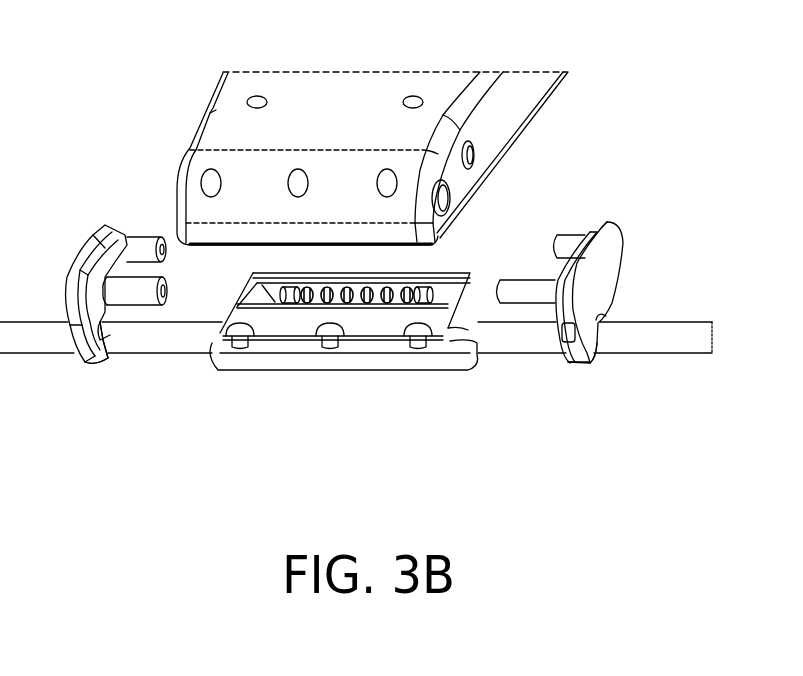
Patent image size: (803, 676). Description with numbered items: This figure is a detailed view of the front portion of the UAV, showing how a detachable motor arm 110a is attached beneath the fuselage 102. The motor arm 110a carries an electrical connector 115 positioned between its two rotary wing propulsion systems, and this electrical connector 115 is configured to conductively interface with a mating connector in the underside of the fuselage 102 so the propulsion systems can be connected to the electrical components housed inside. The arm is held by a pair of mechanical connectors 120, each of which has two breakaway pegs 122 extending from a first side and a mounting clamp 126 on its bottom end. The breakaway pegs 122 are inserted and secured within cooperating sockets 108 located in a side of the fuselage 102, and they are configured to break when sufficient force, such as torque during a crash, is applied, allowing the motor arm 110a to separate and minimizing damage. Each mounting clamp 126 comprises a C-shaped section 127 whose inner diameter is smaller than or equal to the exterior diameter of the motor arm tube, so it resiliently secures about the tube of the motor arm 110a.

The fuselage 102 is at (367, 84).
The cooperating sockets 108 is at (447, 205).
The motor arm 110a is at (682, 343).
The electrical connector 115 is at (340, 365).
The mechanical connector 120 is at (112, 226).
The breakaway pegs 122 is at (166, 249).
The mounting clamp 126 is at (90, 363).
The C-shaped section 127 is at (105, 363).